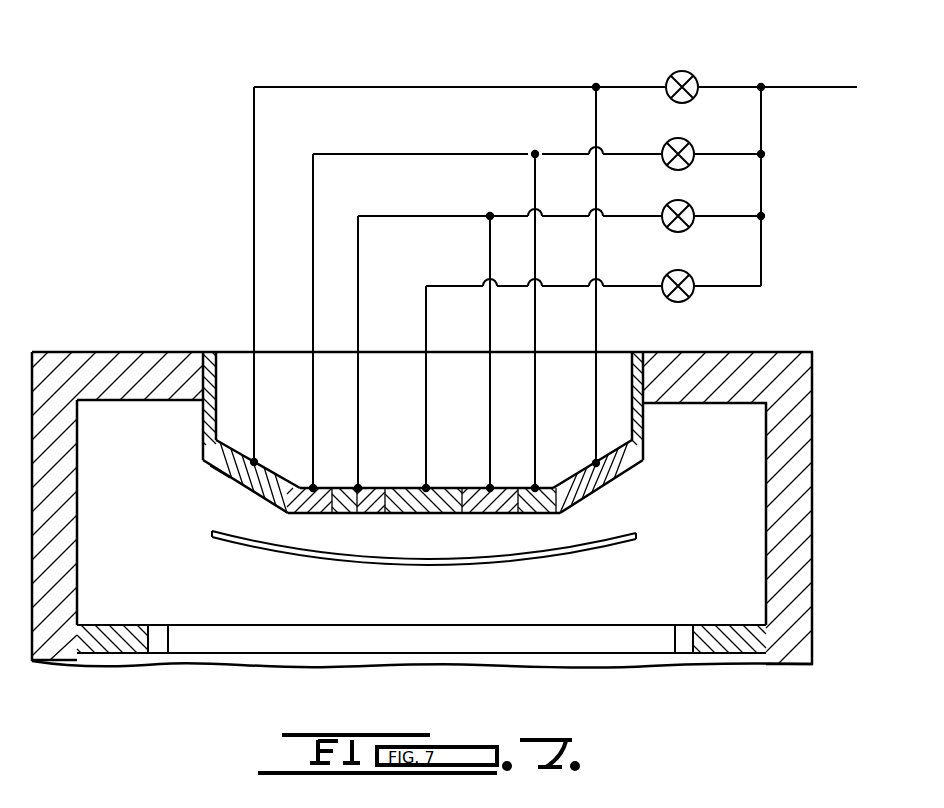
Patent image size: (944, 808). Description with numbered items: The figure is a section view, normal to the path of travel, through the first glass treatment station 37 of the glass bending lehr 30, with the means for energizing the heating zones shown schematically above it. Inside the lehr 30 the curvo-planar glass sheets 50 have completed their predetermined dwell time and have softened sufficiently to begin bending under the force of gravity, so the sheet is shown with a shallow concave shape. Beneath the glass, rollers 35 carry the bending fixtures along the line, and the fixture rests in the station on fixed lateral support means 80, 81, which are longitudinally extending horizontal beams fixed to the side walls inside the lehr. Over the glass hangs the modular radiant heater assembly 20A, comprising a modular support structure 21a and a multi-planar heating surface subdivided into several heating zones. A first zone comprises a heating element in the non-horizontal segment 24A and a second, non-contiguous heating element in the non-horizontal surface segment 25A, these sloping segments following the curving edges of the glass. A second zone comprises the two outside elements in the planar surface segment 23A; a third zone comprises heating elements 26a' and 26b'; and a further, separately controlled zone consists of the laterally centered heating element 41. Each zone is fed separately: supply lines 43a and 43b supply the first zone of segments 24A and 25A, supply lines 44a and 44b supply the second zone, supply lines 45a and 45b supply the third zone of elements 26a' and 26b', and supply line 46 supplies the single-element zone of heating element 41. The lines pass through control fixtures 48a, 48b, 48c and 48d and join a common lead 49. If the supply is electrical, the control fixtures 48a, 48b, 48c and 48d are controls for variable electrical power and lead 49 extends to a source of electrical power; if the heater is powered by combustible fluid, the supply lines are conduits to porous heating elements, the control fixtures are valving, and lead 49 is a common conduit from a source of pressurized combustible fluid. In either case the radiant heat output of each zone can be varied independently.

The glass bending lehr 30 is at (85, 340).
The modular support structure 21a is at (228, 372).
The modular radiant heater assembly 20A is at (203, 462).
The non-horizontal segment 24A is at (236, 483).
The non-horizontal surface segment 25A is at (625, 470).
The laterally centered heating element 41 is at (415, 513).
The planar surface segment 23A is at (470, 513).
The heating element 26a' is at (392, 443).
The heating element 26b' is at (475, 453).
The first glass treatment station 37 is at (716, 457).
The curvo-planar glass sheets 50 is at (625, 549).
The rollers 35 is at (408, 640).
The fixed lateral support means 80 is at (122, 645).
The fixed lateral support means 81 is at (715, 645).
The supply line 43a is at (254, 258).
The supply line 44a is at (313, 285).
The supply line 45a is at (358, 232).
The supply line 45b is at (490, 250).
The supply line 46 is at (426, 308).
The supply line 44b is at (535, 333).
The supply line 43b is at (596, 330).
The control fixture 48a is at (672, 75).
The control fixture 48b is at (665, 148).
The control fixture 48c is at (663, 210).
The control fixture 48d is at (663, 281).
The lead 49 is at (800, 85).